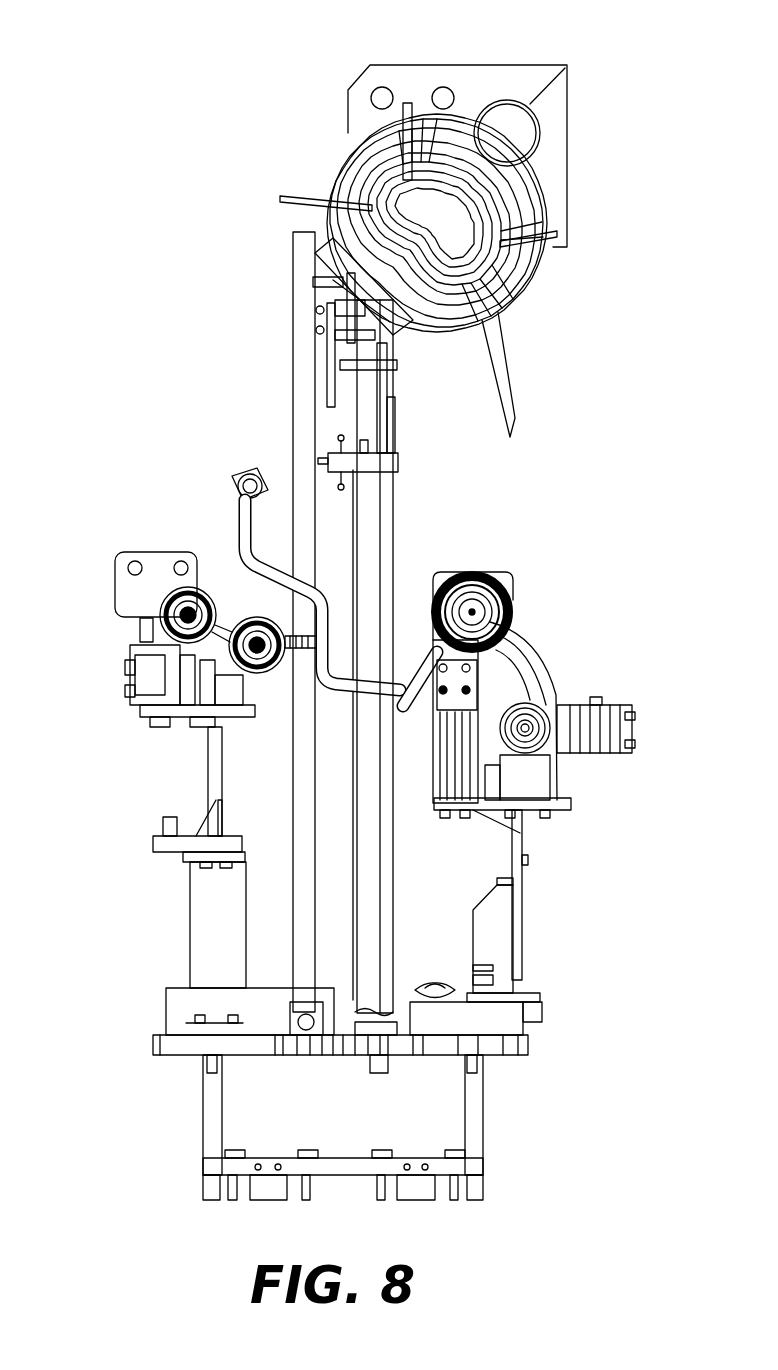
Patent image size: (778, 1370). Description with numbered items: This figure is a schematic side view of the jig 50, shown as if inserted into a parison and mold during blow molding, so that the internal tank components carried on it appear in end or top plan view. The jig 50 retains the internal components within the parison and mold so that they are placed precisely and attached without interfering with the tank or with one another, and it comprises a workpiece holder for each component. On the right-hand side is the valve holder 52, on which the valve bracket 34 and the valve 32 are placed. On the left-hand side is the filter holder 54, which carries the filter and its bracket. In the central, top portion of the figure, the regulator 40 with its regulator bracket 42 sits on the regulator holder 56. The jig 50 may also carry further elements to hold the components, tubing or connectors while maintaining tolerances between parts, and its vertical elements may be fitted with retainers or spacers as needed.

The valve 32 is at (545, 612).
The valve bracket 34 is at (123, 543).
The regulator 40 is at (340, 106).
The regulator bracket 42 is at (487, 174).
The jig 50 is at (233, 618).
The valve holder 52 is at (517, 935).
The filter holder 54 is at (203, 910).
The regulator holder 56 is at (395, 895).